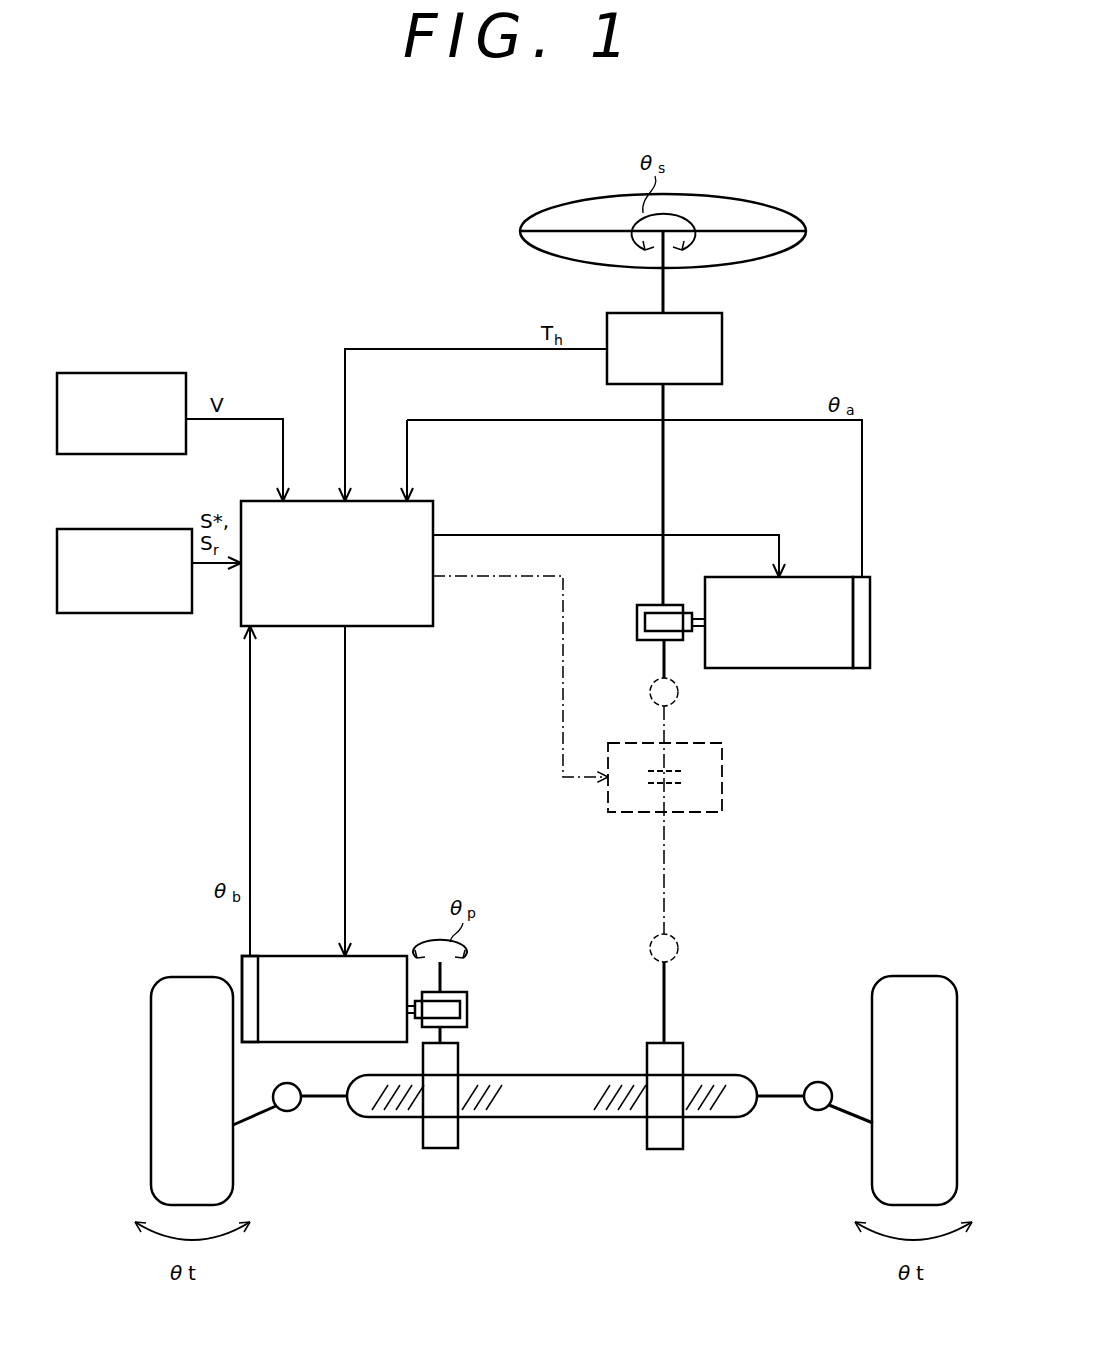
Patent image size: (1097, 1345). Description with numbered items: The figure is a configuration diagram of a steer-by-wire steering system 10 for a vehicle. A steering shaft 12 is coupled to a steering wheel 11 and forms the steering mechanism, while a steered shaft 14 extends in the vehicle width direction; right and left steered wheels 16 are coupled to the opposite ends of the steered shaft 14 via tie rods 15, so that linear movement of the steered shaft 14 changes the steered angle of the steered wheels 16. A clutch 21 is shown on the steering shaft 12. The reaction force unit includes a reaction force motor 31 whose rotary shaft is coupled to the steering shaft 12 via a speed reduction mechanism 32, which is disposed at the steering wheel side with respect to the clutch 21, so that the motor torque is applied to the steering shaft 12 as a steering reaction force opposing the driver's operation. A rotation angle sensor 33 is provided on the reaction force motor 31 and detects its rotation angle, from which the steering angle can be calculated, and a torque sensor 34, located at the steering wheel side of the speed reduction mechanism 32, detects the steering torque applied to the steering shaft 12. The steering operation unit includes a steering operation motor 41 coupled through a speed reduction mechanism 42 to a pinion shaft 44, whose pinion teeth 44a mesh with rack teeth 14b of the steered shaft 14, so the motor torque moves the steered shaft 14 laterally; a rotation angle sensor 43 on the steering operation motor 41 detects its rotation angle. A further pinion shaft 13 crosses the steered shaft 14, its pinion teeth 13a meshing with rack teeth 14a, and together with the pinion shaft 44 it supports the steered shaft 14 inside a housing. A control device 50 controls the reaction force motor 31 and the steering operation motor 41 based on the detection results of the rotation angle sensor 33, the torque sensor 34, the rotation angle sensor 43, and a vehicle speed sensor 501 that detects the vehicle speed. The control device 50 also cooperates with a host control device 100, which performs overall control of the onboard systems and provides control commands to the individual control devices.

The steering system 10 is at (835, 193).
The steering wheel 11 is at (746, 200).
The steering shaft 12 is at (667, 289).
The pinion shaft 13 is at (660, 1010).
The pinion teeth 13a is at (666, 1149).
The steered shaft 14 is at (552, 1127).
The rack teeth 14a is at (622, 1118).
The rack teeth 14b is at (473, 1118).
The tie rod 15 is at (322, 1101).
The steered wheel 16 is at (233, 1170).
The clutch 21 is at (722, 783).
The reaction force motor 31 is at (832, 668).
The speed reduction mechanism 32 is at (628, 611).
The rotation angle sensor 33 is at (862, 668).
The torque sensor 34 is at (722, 347).
The steering operation motor 41 is at (378, 953).
The speed reduction mechanism 42 is at (478, 1030).
The rotation angle sensor 43 is at (247, 1042).
The pinion shaft 44 is at (447, 975).
The pinion teeth 44a is at (441, 1148).
The control device 50 is at (433, 626).
The host control device 100 is at (113, 527).
The vehicle speed sensor 501 is at (113, 370).